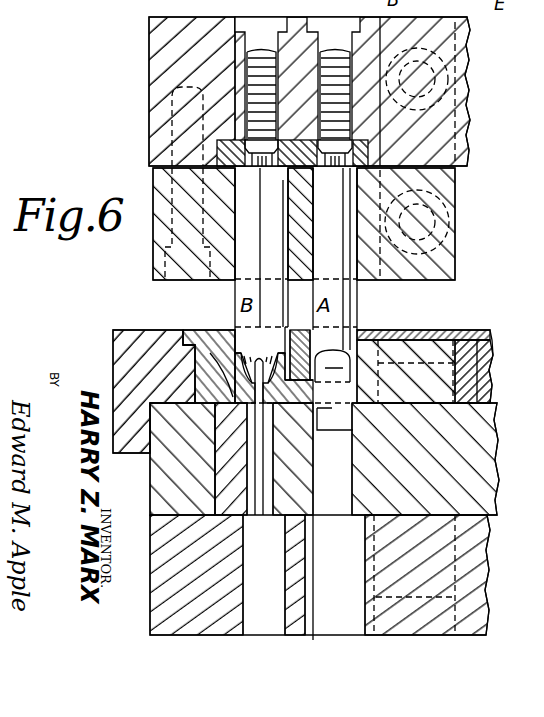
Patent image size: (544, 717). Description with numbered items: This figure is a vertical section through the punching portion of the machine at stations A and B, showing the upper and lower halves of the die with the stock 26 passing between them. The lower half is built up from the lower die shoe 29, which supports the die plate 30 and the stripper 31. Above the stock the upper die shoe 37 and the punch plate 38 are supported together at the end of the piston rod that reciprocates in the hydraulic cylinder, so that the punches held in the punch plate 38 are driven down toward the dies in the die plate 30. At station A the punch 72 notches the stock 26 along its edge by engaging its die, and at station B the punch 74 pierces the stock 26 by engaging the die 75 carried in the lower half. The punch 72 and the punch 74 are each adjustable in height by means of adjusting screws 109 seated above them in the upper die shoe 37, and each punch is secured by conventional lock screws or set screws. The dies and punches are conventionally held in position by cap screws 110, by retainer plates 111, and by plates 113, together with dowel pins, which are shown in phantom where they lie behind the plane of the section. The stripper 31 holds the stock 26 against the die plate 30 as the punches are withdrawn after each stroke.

The stock 26 is at (82, 0).
The lower die shoe 29 is at (482, 570).
The die plate 30 is at (497, 457).
The stripper 31 is at (482, 358).
The upper die shoe 37 is at (460, 125).
The punch plate 38 is at (443, 188).
The punch 72 is at (342, 263).
The punch 74 is at (256, 261).
The die 75 is at (300, 457).
The adjusting screws 109 is at (328, 33).
The cap screws 110 is at (447, 72).
The retainer plates 111 is at (148, 237).
The plates 113 is at (363, 151).